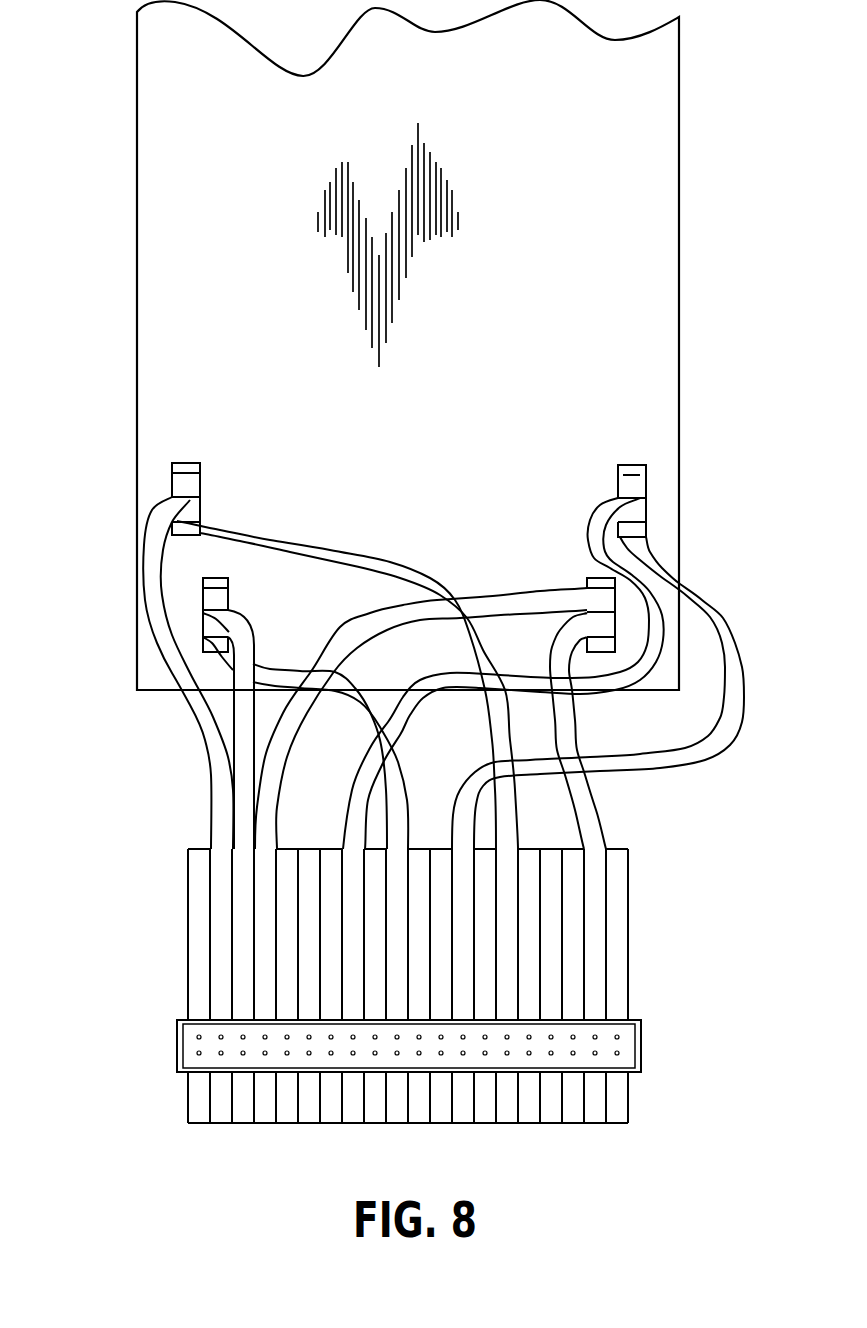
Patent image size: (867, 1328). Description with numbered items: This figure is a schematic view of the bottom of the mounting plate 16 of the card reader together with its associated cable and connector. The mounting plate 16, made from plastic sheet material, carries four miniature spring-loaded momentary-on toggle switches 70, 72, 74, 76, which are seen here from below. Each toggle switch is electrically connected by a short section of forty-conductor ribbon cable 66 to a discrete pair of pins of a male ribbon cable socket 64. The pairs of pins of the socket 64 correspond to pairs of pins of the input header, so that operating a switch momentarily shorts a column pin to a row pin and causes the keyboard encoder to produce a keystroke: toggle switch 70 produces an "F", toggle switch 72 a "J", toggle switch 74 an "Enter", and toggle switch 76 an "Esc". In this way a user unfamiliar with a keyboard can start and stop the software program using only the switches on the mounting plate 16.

The mounting plate 16 is at (610, 352).
The male ribbon cable socket 64 is at (625, 1043).
The ribbon cable 66 is at (572, 922).
The toggle switch 70 is at (185, 482).
The toggle switch 72 is at (207, 620).
The toggle switch 74 is at (637, 487).
The toggle switch 76 is at (598, 586).